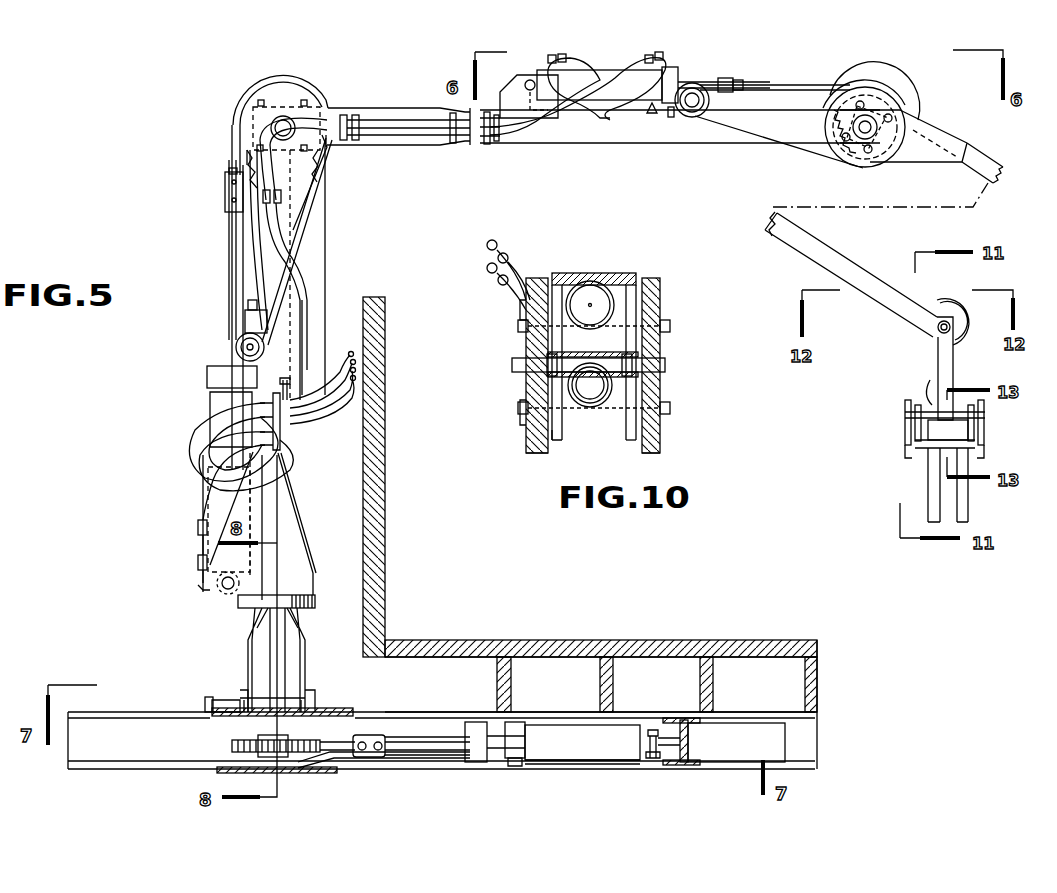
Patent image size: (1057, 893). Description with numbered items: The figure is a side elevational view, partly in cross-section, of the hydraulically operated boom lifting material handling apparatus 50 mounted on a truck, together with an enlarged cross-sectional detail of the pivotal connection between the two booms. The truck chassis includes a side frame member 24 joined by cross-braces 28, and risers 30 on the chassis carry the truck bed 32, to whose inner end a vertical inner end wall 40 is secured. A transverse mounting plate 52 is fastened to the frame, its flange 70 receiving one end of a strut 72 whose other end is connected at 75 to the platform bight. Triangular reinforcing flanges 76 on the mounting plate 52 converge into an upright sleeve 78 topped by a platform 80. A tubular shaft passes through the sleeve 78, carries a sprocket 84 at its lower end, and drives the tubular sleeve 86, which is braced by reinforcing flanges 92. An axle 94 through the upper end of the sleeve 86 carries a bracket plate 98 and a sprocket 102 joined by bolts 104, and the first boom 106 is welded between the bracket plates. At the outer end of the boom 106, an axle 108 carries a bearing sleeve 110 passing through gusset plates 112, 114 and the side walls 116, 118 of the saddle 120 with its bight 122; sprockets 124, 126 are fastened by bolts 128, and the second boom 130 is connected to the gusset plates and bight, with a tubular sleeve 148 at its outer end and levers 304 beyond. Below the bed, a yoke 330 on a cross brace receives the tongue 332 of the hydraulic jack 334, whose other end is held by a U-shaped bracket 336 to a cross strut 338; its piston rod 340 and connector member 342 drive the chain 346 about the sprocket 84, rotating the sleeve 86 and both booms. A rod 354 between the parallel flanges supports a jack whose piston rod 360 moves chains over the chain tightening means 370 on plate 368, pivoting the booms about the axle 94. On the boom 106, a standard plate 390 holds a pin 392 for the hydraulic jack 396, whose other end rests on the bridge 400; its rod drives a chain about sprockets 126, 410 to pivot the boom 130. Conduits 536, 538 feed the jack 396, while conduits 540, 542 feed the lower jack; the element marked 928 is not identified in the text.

In FIG. 5, the side frame member 24 is at (95, 732).
In FIG. 5, the cross-brace 28 is at (688, 760).
In FIG. 5, the riser 30 is at (525, 697).
In FIG. 5, the truck bed 32 is at (652, 642).
In FIG. 5, the inner end wall 40 is at (386, 585).
In FIG. 5, the boom lifting material handling apparatus 50 is at (235, 86).
In FIG. 5, the mounting plate 52 is at (237, 700).
In FIG. 5, the flange 70 is at (214, 700).
In FIG. 5, the strut 72 is at (204, 700).
In FIG. 5, the strut connection 75 is at (203, 706).
In FIG. 5, the triangular reinforcing flange 76 is at (250, 660).
In FIG. 5, the sleeve 78 is at (292, 630).
In FIG. 5, the platform 80 is at (245, 618).
In FIG. 5, the sprocket 84 is at (233, 745).
In FIG. 5, the tubular sleeve 86 is at (292, 347).
In FIG. 5, the reinforcing flange 92 is at (300, 518).
In FIG. 5, the axle 94 is at (289, 118).
In FIG. 5, the bracket plate 98 is at (278, 95).
In FIG. 5, the sprocket 102 is at (250, 150).
In FIG. 5, the bolt 104 is at (262, 100).
In FIG. 5, the first boom 106 is at (375, 112).
In FIG. 10, the first boom 106 is at (592, 398).
In FIG. 10, the axle 108 is at (622, 362).
In FIG. 10, the bearing sleeve 110 is at (552, 360).
In FIG. 10, the gusset plate 112 is at (560, 442).
In FIG. 5, the gusset plate 114 is at (916, 155).
In FIG. 10, the gusset plate 114 is at (630, 442).
In FIG. 10, the side wall 116 is at (535, 435).
In FIG. 5, the side wall 118 is at (884, 164).
In FIG. 10, the side wall 118 is at (655, 422).
In FIG. 10, the saddle 120 is at (611, 257).
In FIG. 10, the bight portion 122 is at (576, 272).
In FIG. 10, the sprocket 124 is at (537, 272).
In FIG. 5, the sprocket 126 is at (830, 145).
In FIG. 10, the sprocket 126 is at (652, 282).
In FIG. 5, the bolt 128 is at (860, 102).
In FIG. 10, the bolt 128 is at (518, 326).
In FIG. 5, the second boom 130 is at (985, 155).
In FIG. 10, the second boom 130 is at (615, 282).
In FIG. 5, the tubular sleeve 148 is at (950, 372).
In FIG. 5, the lever 304 is at (899, 429).
In FIG. 5, the yoke 330 is at (672, 768).
In FIG. 5, the tongue 332 is at (650, 762).
In FIG. 5, the hydraulic jack 334 is at (600, 765).
In FIG. 5, the U-shaped bracket 336 is at (540, 745).
In FIG. 5, the cross strut 338 is at (535, 766).
In FIG. 5, the piston rod 340 is at (437, 740).
In FIG. 5, the connector member 342 is at (376, 758).
In FIG. 5, the chain 346 is at (340, 770).
In FIG. 5, the rod 354 is at (218, 583).
In FIG. 5, the piston rod 360 is at (226, 265).
In FIG. 5, the plate 368 is at (265, 320).
In FIG. 5, the chain tightening means 370 is at (236, 329).
In FIG. 5, the standard plate 390 is at (525, 118).
In FIG. 5, the pin 392 is at (530, 80).
In FIG. 5, the hydraulic jack 396 is at (628, 80).
In FIG. 5, the bridge 400 is at (652, 115).
In FIG. 5, the sprocket 410 is at (695, 112).
In FIG. 5, the conduit 536 is at (576, 62).
In FIG. 5, the conduit 538 is at (666, 58).
In FIG. 5, the conduit 540 is at (205, 450).
In FIG. 5, the conduit 542 is at (210, 490).
In FIG. 5, the cable 928 is at (240, 504).